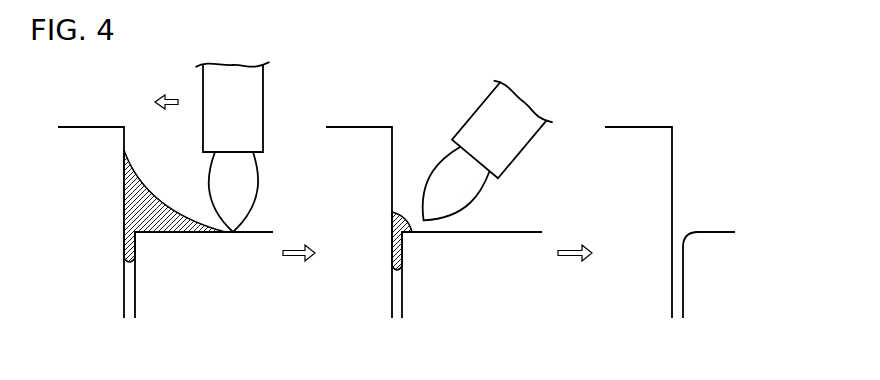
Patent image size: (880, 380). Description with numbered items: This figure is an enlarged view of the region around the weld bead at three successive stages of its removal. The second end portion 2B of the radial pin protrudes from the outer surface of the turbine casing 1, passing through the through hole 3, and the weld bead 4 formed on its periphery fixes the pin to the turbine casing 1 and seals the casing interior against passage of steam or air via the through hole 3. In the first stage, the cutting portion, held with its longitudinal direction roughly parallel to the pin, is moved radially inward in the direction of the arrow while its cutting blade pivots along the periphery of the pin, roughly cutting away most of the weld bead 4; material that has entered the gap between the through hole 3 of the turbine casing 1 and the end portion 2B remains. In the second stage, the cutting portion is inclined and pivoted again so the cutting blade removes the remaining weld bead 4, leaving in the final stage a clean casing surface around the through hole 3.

The turbine casing 1 is at (262, 237).
The second end portion 2B is at (70, 131).
The through hole 3 is at (130, 292).
The weld bead 4 is at (148, 177).